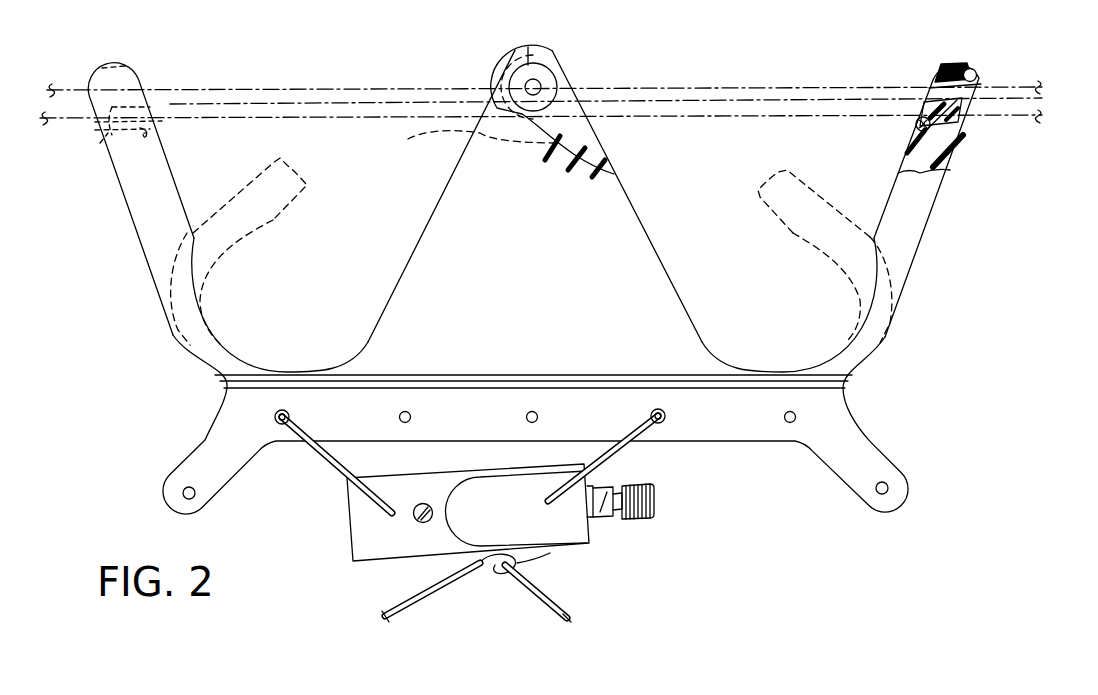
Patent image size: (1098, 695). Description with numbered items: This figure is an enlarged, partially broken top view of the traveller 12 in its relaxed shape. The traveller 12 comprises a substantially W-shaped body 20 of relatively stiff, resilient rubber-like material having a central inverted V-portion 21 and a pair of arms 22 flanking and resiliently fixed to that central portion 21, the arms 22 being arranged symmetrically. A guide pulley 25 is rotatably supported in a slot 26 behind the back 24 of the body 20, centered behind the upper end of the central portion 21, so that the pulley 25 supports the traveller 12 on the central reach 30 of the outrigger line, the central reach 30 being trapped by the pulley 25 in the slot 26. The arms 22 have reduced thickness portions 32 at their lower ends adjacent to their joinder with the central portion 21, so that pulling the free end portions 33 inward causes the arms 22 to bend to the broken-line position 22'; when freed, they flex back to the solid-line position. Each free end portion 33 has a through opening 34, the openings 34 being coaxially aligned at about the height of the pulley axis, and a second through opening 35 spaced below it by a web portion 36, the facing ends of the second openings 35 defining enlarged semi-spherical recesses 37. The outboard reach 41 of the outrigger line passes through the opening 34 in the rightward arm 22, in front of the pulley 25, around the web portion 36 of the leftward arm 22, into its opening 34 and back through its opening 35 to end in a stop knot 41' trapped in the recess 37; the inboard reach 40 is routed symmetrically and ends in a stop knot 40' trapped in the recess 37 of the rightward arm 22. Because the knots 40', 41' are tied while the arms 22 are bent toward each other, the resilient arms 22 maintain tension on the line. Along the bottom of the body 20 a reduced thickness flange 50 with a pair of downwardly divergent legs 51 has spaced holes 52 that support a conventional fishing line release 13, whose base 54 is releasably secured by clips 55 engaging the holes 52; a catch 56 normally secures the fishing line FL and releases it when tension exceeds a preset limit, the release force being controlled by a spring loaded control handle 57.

The traveller 12 is at (935, 302).
The fishing line release 13 is at (491, 524).
The body 20 is at (540, 285).
The central inverted V-portion 21 is at (612, 210).
The arms 22 is at (539, 200).
The inwardly bent position of arms 22' is at (531, 252).
The back 24 is at (468, 143).
The guide pulley 25 is at (540, 62).
The slot 26 is at (583, 133).
The central reach 30 is at (697, 118).
The reduced thickness portions 32 is at (200, 340).
The free end portions 33 is at (100, 67).
The through openings 34 is at (143, 80).
The second through openings 35 is at (100, 145).
The web portion 36 is at (108, 124).
The semi-spherical recesses 37 is at (157, 133).
The inboard end reach 40 is at (567, 89).
The stop knot 40' is at (860, 138).
The outboard end reach 41 is at (632, 75).
The stop knot 41' is at (176, 137).
The flange 50 is at (720, 448).
The legs 51 is at (218, 503).
The holes 52 is at (888, 491).
The base 54 is at (390, 557).
The clips 55 is at (330, 460).
The catch 56 is at (540, 563).
The spring loaded control handle 57 is at (632, 517).
The fishing line FL is at (433, 595).